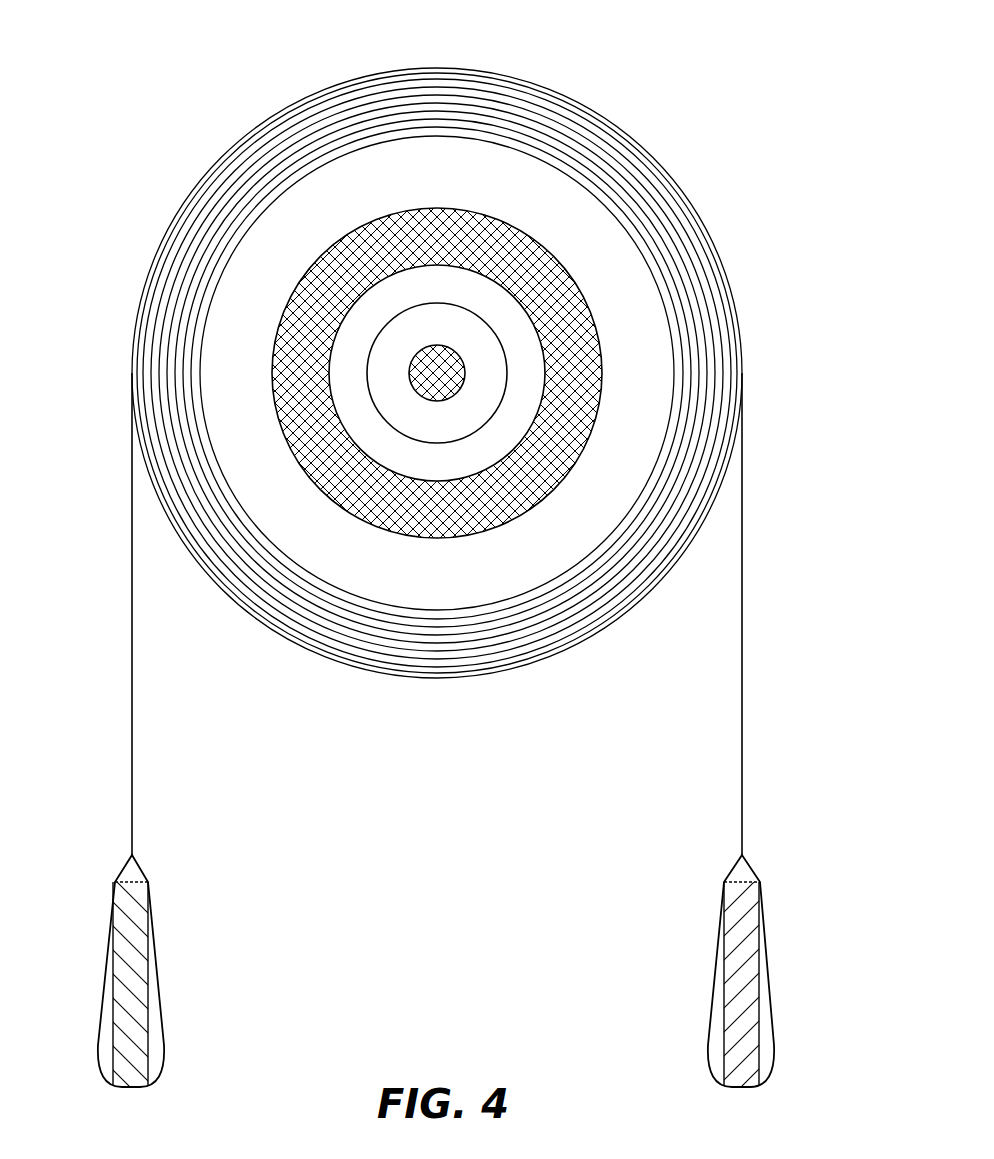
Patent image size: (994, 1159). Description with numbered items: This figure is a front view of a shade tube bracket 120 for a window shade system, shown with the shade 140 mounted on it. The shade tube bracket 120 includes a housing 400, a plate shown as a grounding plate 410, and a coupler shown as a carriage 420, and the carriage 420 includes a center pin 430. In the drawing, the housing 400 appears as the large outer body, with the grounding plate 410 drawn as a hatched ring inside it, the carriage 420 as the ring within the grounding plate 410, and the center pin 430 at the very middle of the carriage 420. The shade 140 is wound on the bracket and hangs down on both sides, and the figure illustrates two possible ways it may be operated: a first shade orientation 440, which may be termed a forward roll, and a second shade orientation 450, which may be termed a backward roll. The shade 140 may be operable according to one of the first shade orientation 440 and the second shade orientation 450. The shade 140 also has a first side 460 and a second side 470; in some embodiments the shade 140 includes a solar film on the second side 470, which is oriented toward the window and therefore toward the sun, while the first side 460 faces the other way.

The housing 400 is at (476, 431).
The shade tube bracket 120 is at (437, 412).
The shade 140 is at (480, 677).
The grounding plate 410 is at (575, 268).
The carriage 420 is at (507, 398).
The center pin 430 is at (425, 343).
The first shade orientation 440 is at (167, 971).
The second shade orientation 450 is at (702, 971).
The first side 460 is at (113, 818).
The second side 470 is at (147, 778).